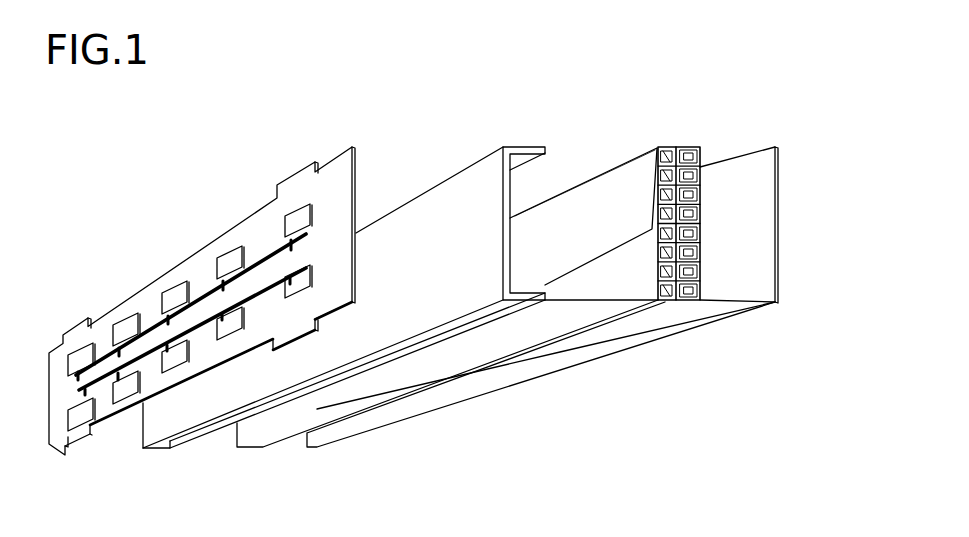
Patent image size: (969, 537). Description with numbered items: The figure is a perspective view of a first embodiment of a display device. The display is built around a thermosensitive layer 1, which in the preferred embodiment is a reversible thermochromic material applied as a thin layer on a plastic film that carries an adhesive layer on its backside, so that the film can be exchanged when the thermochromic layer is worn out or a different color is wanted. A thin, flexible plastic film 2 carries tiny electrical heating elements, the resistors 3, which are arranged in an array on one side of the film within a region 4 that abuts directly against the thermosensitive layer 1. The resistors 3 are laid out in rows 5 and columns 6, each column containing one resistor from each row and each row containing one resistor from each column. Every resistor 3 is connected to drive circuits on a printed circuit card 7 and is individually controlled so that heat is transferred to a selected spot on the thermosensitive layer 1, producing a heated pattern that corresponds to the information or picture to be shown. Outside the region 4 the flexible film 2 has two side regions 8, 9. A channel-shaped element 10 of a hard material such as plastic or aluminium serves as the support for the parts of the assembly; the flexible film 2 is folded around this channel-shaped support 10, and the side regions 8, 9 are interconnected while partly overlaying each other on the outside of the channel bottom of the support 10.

The thermosensitive layer 1 is at (757, 190).
The flexible plastic film 2 is at (588, 176).
The resistors 3 is at (740, 224).
The region 4 is at (700, 165).
The rows 5 is at (701, 234).
The columns 6 is at (672, 168).
The printed circuit card 7 is at (200, 262).
The side region 8 is at (628, 178).
The side region 9 is at (595, 303).
The channel-shaped element 10 is at (437, 208).